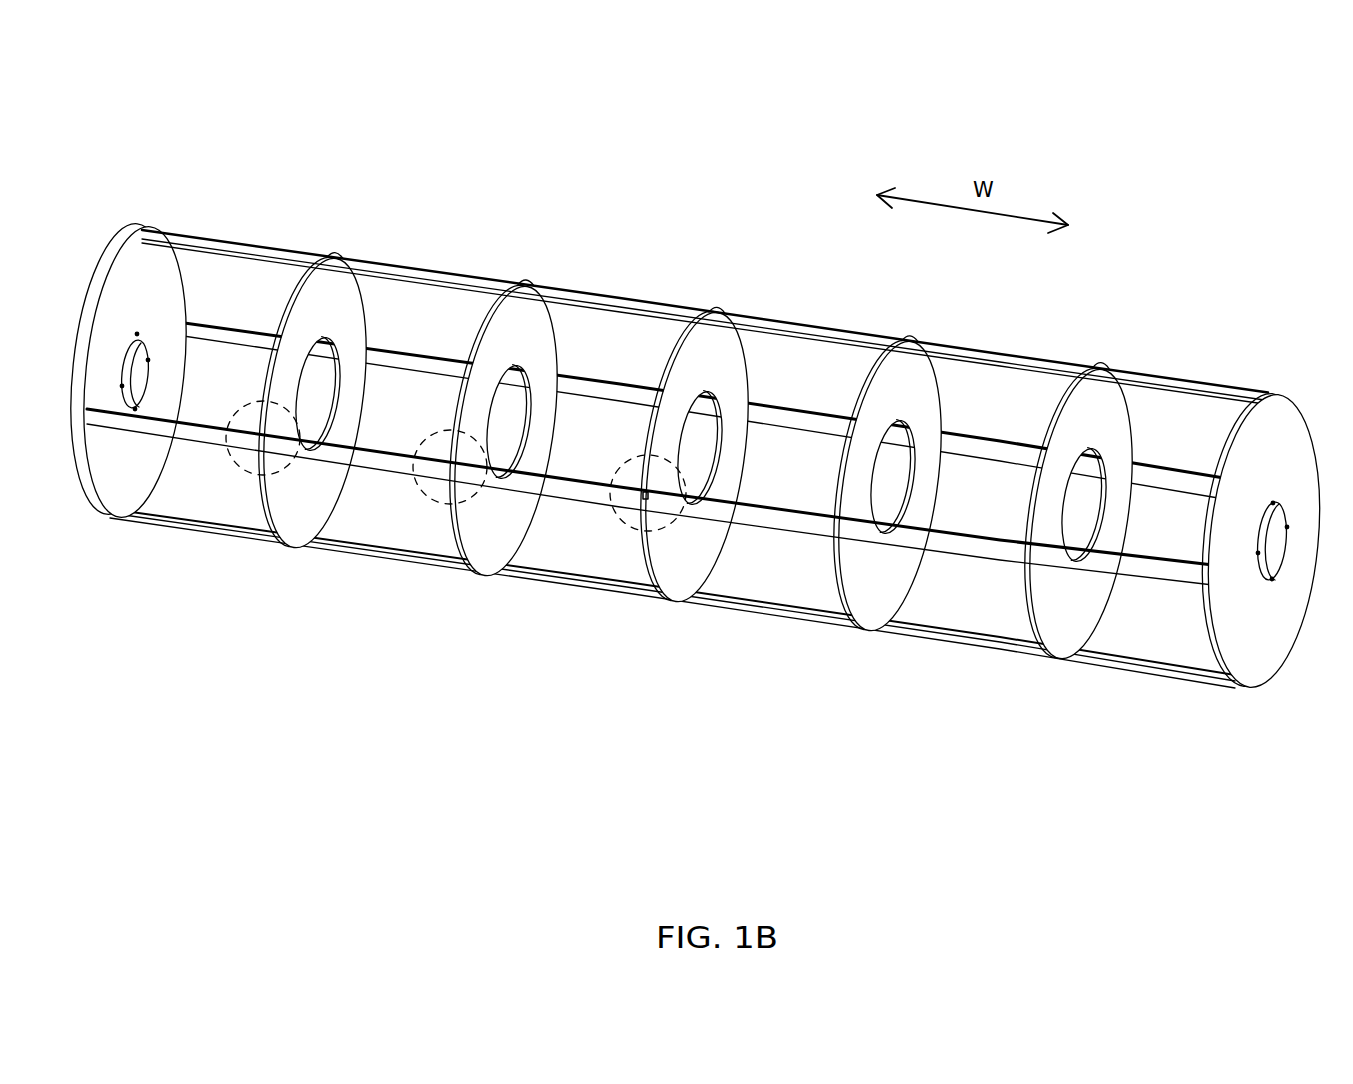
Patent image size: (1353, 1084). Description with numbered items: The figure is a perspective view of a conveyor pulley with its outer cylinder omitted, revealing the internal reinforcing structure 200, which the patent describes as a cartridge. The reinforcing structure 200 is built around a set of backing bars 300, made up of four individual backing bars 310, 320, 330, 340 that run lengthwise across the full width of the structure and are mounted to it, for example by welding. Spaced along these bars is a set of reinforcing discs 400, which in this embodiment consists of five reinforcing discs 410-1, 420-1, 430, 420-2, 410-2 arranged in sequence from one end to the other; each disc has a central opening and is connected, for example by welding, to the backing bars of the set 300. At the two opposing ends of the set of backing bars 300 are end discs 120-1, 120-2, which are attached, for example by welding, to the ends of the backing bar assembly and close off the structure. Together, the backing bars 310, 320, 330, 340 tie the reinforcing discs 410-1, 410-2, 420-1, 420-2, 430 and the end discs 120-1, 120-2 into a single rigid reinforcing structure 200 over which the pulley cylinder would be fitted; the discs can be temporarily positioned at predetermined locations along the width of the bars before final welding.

The reinforcing structure 200 is at (701, 401).
The set of backing bars 300 is at (701, 423).
The backing bar 310 is at (212, 240).
The backing bar 320 is at (198, 322).
The backing bar 330 is at (178, 443).
The backing bar 340 is at (165, 530).
The set of reinforcing discs 400 is at (733, 504).
The reinforcing disc 410-1 is at (297, 541).
The reinforcing disc 410-2 is at (1058, 645).
The reinforcing disc 420-1 is at (487, 560).
The reinforcing disc 420-2 is at (876, 630).
The reinforcing disc 430 is at (678, 606).
The end disc 120-1 is at (105, 250).
The end disc 120-2 is at (1315, 405).